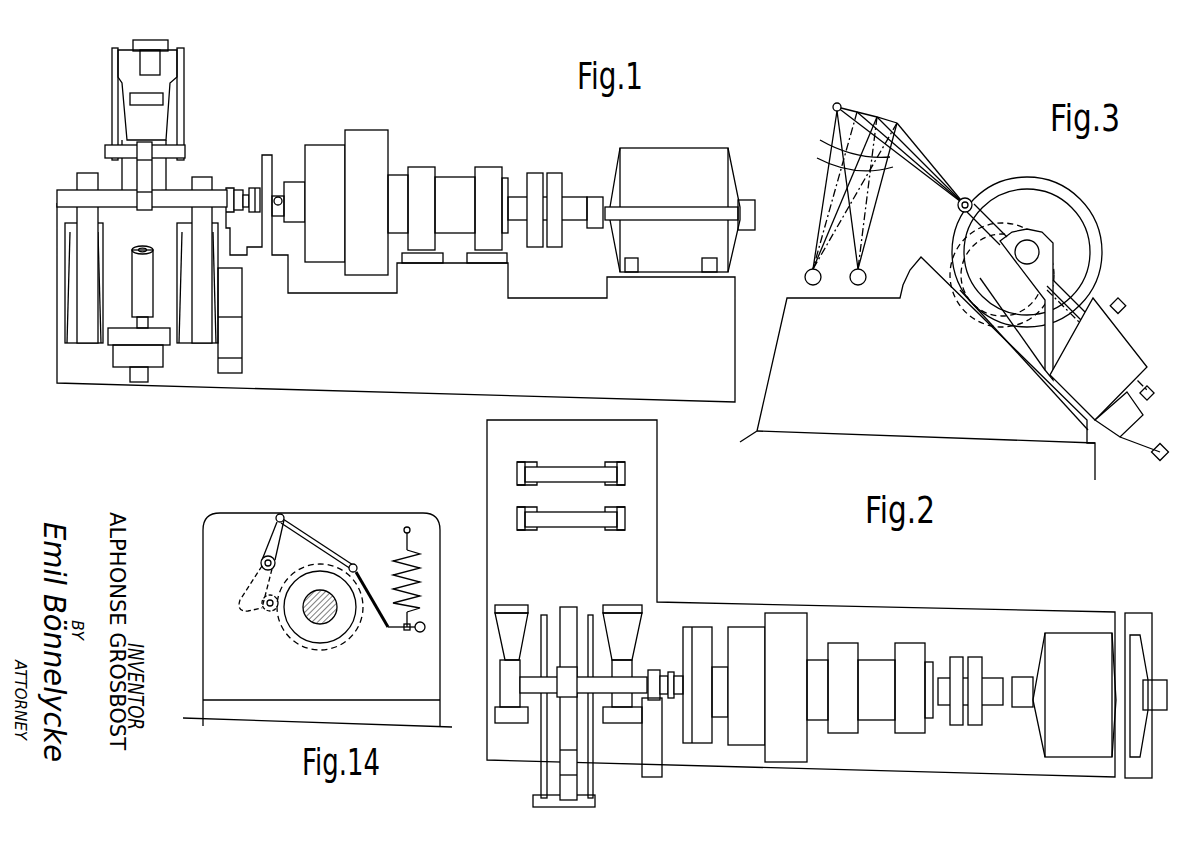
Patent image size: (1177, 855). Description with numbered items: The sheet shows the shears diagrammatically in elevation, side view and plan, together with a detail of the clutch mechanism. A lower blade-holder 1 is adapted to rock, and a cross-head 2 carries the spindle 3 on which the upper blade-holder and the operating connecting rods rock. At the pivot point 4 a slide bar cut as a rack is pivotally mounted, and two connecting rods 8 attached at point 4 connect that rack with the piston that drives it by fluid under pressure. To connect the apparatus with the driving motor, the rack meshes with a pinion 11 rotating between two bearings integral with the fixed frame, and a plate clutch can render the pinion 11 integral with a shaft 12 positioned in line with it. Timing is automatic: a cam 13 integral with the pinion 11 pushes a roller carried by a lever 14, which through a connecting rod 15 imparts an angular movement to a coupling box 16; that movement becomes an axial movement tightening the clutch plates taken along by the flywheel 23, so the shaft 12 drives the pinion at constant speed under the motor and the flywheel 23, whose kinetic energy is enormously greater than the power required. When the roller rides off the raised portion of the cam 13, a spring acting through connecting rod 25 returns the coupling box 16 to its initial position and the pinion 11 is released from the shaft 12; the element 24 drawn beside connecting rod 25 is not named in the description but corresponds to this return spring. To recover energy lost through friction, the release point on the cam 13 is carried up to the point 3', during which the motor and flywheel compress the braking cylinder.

In FIG. 14, the lower blade-holder 1 is at (305, 604).
In FIG. 3, the cross-head 2 is at (932, 182).
In FIG. 14, the cross-head 2 is at (313, 660).
In FIG. 14, the spindle 3 is at (325, 629).
In FIG. 14, the cam point 3' is at (400, 641).
In FIG. 3, the pivot point 4 is at (958, 208).
In FIG. 14, the pivot point 4 is at (360, 577).
In FIG. 3, the connecting rods 8 is at (1108, 350).
In FIG. 1, the pinion 11 is at (178, 194).
In FIG. 14, the pinion 11 is at (312, 621).
In FIG. 2, the pinion 11 is at (537, 683).
In FIG. 1, the shaft 12 is at (533, 186).
In FIG. 2, the shaft 12 is at (957, 662).
In FIG. 1, the cam 13 is at (252, 188).
In FIG. 14, the cam 13 is at (361, 638).
In FIG. 2, the cam 13 is at (670, 677).
In FIG. 14, the lever 14 is at (275, 538).
In FIG. 14, the connecting rod 15 is at (307, 532).
In FIG. 1, the coupling box 16 is at (328, 157).
In FIG. 2, the coupling box 16 is at (748, 640).
In FIG. 1, the flywheel 23 is at (377, 152).
In FIG. 2, the flywheel 23 is at (793, 623).
In FIG. 14, the spring 24 is at (427, 563).
In FIG. 14, the connecting rod 25 is at (376, 600).